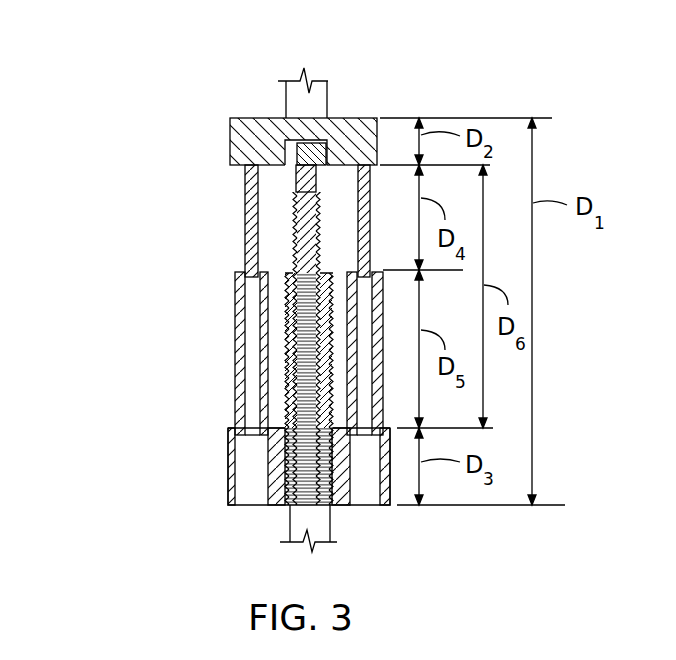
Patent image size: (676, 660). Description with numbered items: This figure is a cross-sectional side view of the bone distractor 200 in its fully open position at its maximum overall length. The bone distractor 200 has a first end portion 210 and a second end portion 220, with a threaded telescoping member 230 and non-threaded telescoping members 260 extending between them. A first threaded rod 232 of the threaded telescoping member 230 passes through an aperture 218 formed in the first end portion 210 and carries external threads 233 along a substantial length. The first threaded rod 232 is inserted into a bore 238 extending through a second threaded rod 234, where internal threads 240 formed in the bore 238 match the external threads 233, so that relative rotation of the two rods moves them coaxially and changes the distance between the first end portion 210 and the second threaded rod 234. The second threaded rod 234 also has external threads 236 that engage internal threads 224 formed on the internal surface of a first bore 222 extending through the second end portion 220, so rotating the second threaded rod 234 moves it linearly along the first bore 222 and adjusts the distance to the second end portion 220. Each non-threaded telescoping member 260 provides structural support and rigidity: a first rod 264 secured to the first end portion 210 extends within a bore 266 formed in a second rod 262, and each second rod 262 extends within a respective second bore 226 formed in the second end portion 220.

The bone distractor 200 is at (410, 88).
The first end portion 210 is at (220, 139).
The aperture 218 is at (291, 156).
The external threads 233 is at (312, 212).
The first threaded rod 232 is at (293, 200).
The threaded telescoping member 230 is at (281, 258).
The first rod 264 is at (245, 243).
The second threaded rod 234 is at (222, 370).
The second rod 262 is at (233, 412).
The non-threaded telescoping member 260 is at (233, 360).
The external threads 236 is at (285, 290).
The bore 266 is at (248, 300).
The internal threads 240 is at (302, 355).
The second end portion 220 is at (234, 476).
The bore 238 is at (290, 440).
The second bores 226 is at (238, 478).
The first bore 222 is at (318, 490).
The internal threads 224 is at (312, 472).